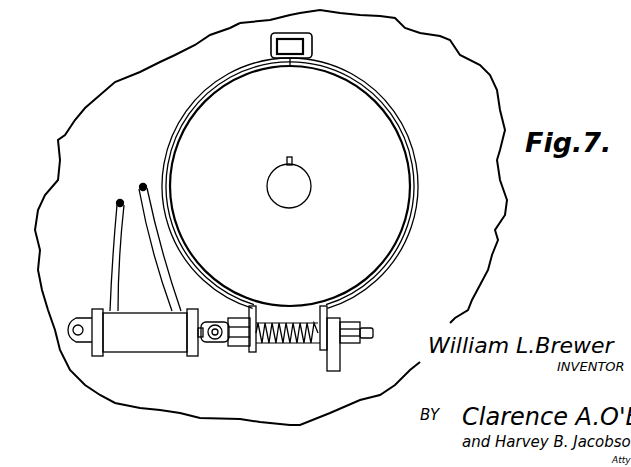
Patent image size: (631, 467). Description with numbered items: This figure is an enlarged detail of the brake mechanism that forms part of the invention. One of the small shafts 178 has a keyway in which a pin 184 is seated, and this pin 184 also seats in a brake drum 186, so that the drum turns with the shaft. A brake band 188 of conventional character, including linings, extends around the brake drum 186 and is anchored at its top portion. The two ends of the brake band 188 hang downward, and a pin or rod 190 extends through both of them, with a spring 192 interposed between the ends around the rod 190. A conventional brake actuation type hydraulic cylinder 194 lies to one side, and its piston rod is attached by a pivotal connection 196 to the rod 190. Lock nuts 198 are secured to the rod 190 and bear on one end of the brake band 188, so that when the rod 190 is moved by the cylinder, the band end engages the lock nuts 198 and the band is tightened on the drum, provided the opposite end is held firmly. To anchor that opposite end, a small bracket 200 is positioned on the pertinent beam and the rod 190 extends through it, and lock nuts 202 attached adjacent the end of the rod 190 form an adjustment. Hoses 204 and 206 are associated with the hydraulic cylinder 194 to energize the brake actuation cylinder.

The small shaft 178 is at (310, 195).
The pin 184 is at (310, 152).
The brake drum 186 is at (357, 98).
The brake band 188 is at (417, 202).
The pin 190 is at (283, 345).
The spring 192 is at (360, 306).
The hydraulic cylinder 194 is at (138, 342).
The pivotal connection 196 is at (217, 340).
The lock nuts 198 is at (248, 346).
The bracket 200 is at (336, 358).
The lock nuts 202 is at (362, 327).
The hose 204 is at (145, 186).
The hose 206 is at (117, 215).